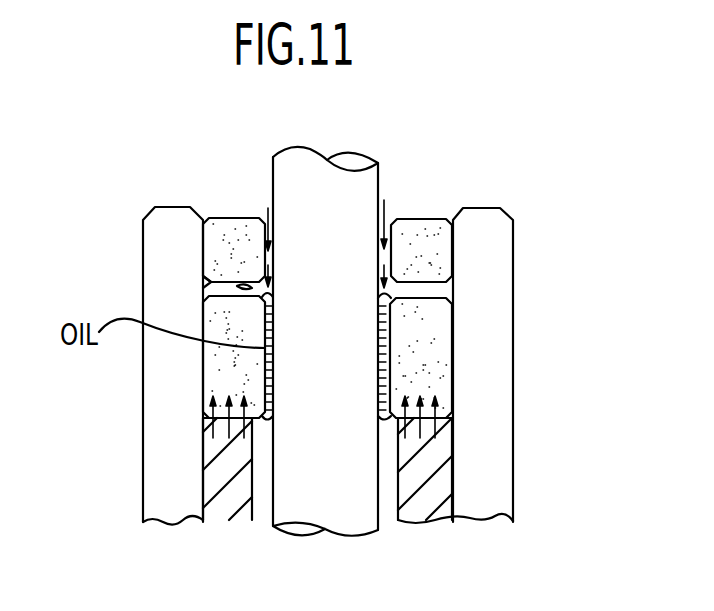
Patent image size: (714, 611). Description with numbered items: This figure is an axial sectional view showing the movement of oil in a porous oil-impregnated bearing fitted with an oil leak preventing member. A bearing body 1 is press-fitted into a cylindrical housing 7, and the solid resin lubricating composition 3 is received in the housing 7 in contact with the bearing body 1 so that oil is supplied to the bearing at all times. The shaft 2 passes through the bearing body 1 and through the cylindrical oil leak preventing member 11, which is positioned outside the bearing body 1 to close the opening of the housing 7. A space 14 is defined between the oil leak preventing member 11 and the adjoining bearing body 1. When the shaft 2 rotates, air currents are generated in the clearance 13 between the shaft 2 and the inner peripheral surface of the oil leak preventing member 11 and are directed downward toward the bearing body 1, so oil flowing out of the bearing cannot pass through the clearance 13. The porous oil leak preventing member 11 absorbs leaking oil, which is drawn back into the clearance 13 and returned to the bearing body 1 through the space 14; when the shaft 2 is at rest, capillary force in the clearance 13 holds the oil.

The bearing body 1 is at (442, 353).
The shaft 2 is at (290, 168).
The solid resin lubricating composition 3 is at (433, 500).
The housing 7 is at (495, 450).
The oil leak preventing member 11 is at (230, 237).
The clearance 13 is at (391, 225).
The space 14 is at (442, 292).